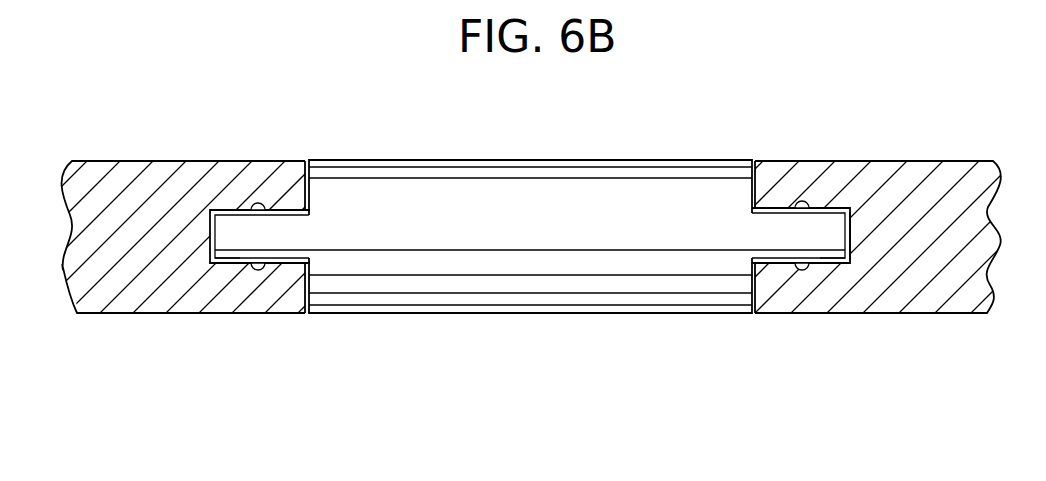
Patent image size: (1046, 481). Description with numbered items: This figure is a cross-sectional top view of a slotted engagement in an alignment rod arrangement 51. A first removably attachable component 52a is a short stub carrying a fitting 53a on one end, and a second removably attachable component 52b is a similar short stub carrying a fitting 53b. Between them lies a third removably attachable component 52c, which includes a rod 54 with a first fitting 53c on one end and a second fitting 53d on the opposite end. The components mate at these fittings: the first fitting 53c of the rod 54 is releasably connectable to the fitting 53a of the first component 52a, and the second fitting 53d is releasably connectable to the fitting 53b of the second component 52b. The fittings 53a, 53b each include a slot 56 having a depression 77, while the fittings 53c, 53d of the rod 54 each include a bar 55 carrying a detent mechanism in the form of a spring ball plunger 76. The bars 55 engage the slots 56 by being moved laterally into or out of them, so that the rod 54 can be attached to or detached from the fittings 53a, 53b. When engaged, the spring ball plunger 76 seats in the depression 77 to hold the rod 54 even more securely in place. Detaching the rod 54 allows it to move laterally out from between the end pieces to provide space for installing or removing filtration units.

The coupling assembly 51 is at (530, 287).
The first removably attachable component 52a is at (142, 298).
The second removably attachable component 52b is at (923, 300).
The third removably attachable component 52c is at (422, 265).
The fitting 53a is at (236, 265).
The fitting 53b is at (830, 266).
The first fitting 53c is at (273, 213).
The second fitting 53d is at (833, 236).
The rod 54 is at (588, 282).
The bar 55 is at (290, 232).
The slot 56 is at (226, 270).
The spring ball plunger 76 is at (252, 203).
The depression 77 is at (254, 272).